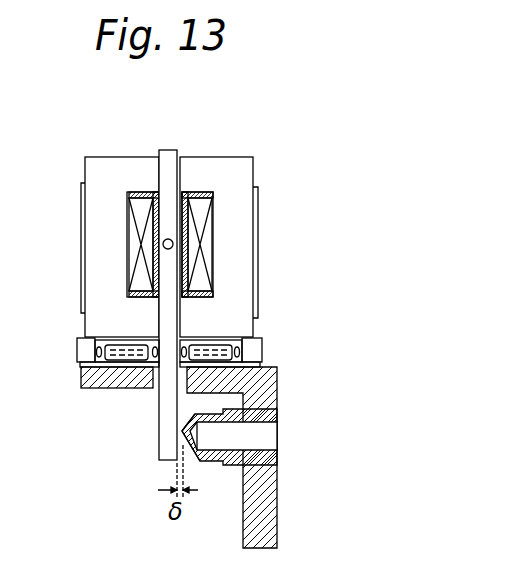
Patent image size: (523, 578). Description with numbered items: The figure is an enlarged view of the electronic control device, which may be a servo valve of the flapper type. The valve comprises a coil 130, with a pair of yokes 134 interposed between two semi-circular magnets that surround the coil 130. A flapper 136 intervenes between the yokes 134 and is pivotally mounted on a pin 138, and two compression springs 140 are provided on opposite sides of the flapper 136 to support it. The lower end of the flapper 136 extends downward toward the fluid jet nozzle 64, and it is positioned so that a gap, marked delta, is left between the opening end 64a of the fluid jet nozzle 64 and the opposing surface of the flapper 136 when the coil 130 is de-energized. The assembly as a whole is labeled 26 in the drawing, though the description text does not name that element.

The damper assembly 26 is at (101, 156).
The housing cover 134 is at (258, 282).
The coil 130 is at (128, 232).
The plate 136 is at (170, 149).
The pin 138 is at (164, 247).
The bearing 140 is at (184, 367).
The fitting 64 is at (211, 463).
The nose of fitting 64a is at (183, 440).